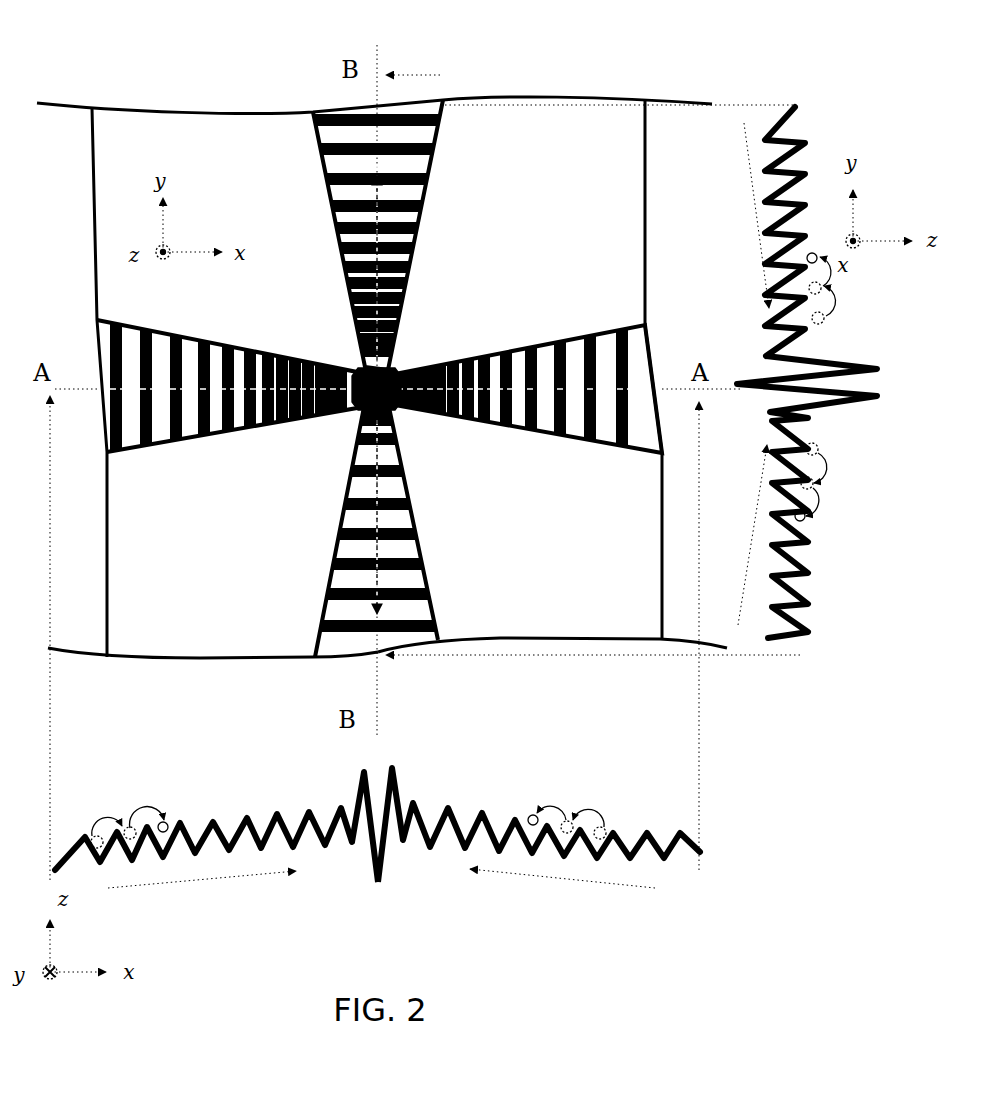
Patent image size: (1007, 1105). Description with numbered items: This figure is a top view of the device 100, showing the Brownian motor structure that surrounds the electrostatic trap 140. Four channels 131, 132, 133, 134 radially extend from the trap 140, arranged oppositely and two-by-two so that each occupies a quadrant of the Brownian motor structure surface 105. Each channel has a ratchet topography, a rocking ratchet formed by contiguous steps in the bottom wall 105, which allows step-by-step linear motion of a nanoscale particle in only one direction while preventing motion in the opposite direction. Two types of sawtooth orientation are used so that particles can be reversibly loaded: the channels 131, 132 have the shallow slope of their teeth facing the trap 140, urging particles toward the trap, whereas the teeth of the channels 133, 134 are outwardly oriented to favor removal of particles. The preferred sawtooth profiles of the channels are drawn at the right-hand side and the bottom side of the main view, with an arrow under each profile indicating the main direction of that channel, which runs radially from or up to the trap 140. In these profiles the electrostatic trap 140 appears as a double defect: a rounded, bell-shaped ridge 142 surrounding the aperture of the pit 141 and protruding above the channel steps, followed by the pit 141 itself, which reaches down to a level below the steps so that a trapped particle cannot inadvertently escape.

The device 100 is at (723, 635).
The Brownian motor structure surface 105 is at (196, 642).
The channel 131 is at (247, 353).
The channel 132 is at (530, 350).
The channel 133 is at (332, 562).
The channel 134 is at (430, 230).
The electrostatic trap 140 is at (358, 372).
The pit 141 is at (385, 768).
The ridge 142 is at (400, 772).